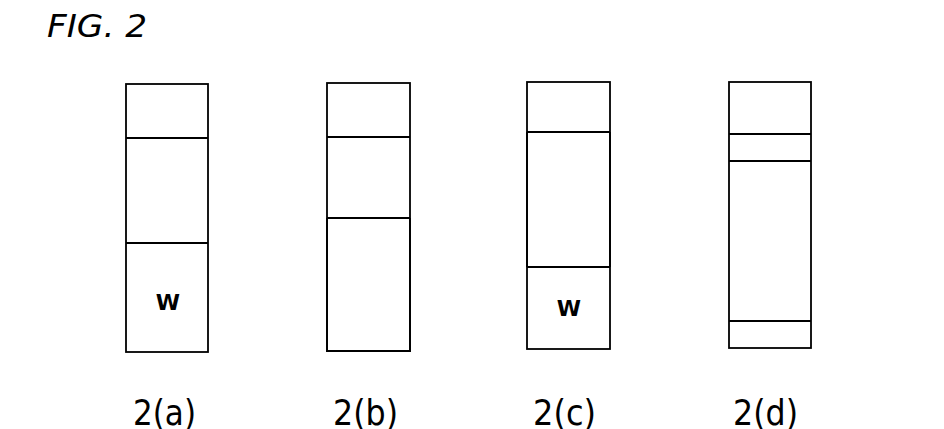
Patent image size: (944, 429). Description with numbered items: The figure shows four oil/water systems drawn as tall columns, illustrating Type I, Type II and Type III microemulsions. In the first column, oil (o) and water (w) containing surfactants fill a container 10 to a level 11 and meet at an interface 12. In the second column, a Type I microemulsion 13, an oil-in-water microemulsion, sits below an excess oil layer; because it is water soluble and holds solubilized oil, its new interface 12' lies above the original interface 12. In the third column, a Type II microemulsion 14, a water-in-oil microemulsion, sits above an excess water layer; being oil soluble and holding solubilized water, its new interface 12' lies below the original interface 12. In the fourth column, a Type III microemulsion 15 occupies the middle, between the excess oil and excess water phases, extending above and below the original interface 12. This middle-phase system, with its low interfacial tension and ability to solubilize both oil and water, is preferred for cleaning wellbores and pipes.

The container 10 is at (167, 84).
The level 11 is at (180, 138).
The interface 12 is at (189, 212).
The new interface 12' is at (493, 216).
The Type I microemulsion 13 is at (378, 277).
The Type II microemulsion 14 is at (578, 185).
The Type III microemulsion 15 is at (798, 223).